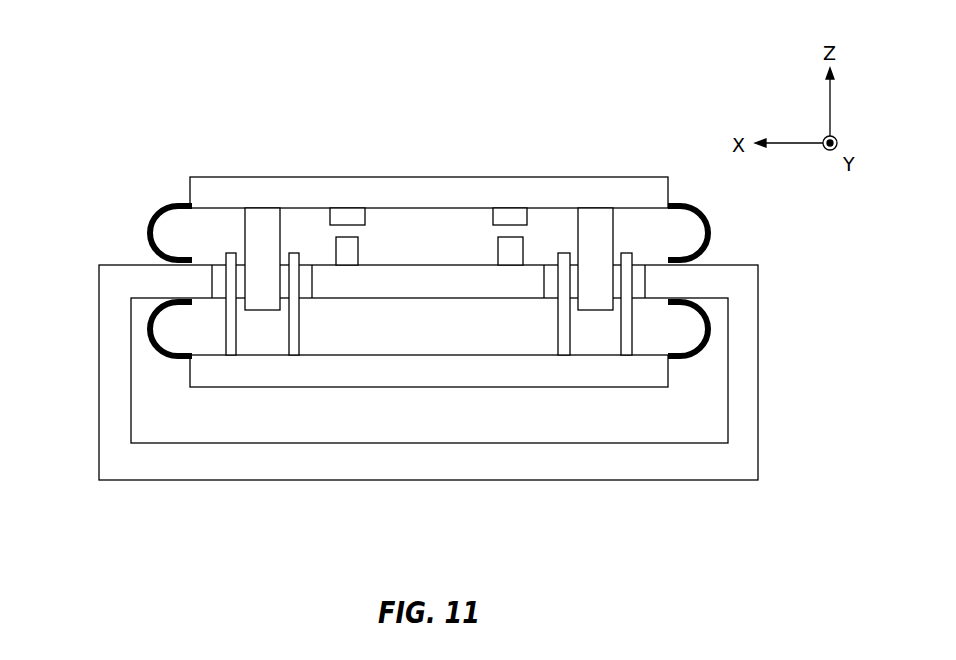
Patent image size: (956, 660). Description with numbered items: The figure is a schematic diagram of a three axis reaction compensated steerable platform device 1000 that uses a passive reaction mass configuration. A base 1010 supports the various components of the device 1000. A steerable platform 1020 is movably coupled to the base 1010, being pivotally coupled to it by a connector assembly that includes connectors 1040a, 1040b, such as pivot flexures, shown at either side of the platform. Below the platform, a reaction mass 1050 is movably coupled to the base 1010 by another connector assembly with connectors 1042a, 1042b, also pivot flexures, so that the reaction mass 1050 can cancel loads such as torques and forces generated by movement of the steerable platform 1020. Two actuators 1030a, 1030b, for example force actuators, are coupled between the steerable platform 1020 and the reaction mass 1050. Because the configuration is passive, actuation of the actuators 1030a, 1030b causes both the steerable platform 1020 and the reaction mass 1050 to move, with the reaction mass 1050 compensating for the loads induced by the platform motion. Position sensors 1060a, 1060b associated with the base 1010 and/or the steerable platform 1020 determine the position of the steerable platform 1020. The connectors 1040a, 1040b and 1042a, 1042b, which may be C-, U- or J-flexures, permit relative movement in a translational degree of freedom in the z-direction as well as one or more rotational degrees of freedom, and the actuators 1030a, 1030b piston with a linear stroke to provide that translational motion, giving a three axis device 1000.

The reaction compensated steerable platform device 1000 is at (240, 77).
The base 1010 is at (99, 400).
The steerable platform 1020 is at (432, 177).
The actuator 1030a is at (224, 236).
The actuator 1030b is at (636, 235).
The connector 1040a is at (150, 234).
The connector 1040b is at (708, 232).
The connector 1042a is at (150, 330).
The connector 1042b is at (708, 330).
The reaction mass 1050 is at (433, 387).
The position sensor 1060a is at (321, 228).
The position sensor 1060b is at (535, 235).